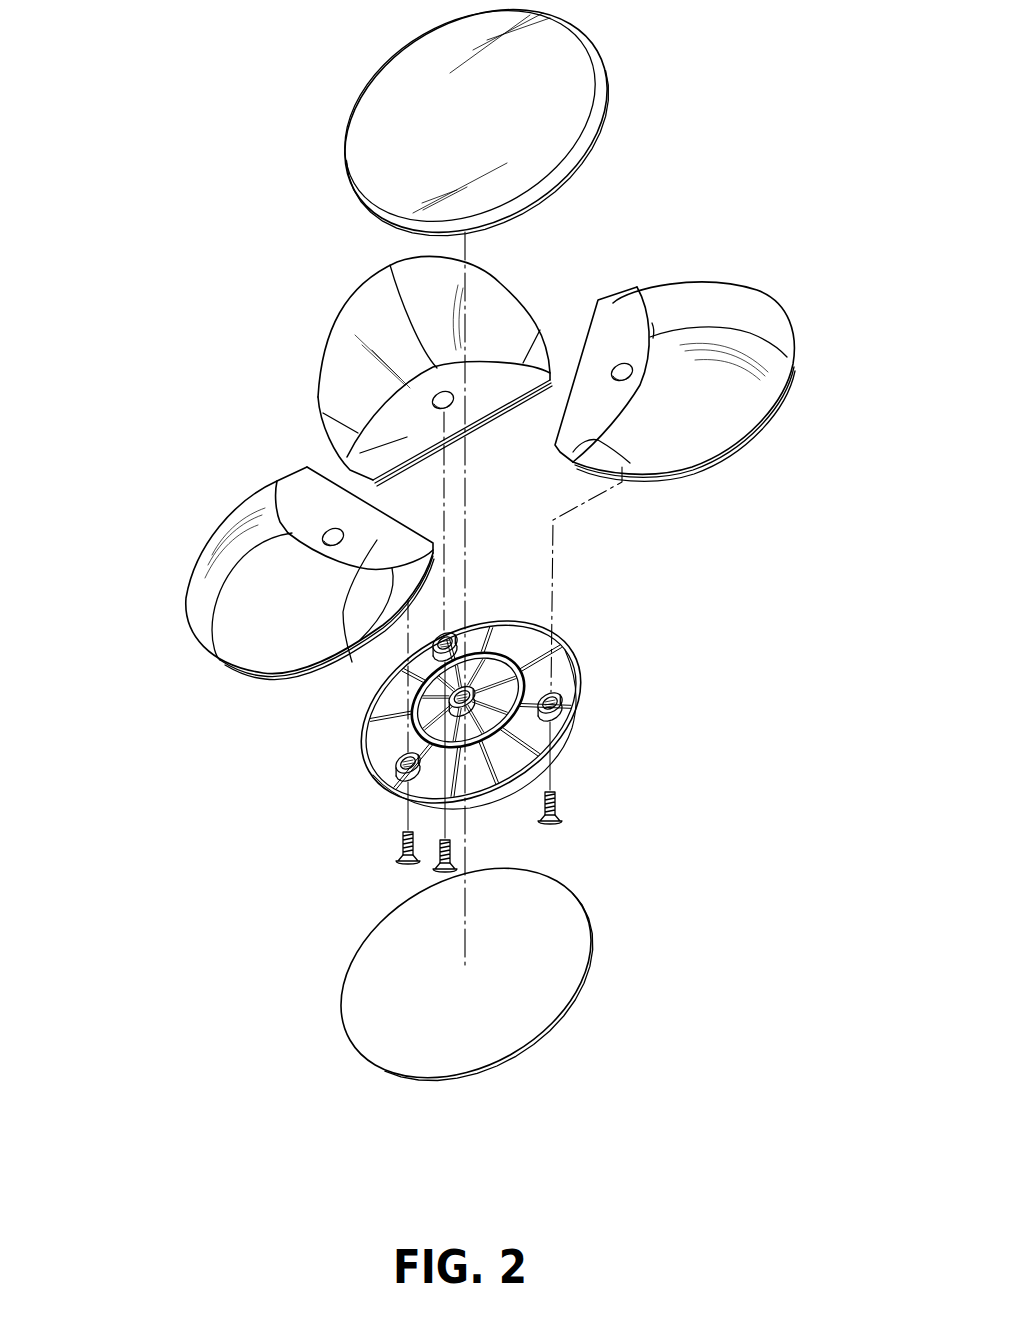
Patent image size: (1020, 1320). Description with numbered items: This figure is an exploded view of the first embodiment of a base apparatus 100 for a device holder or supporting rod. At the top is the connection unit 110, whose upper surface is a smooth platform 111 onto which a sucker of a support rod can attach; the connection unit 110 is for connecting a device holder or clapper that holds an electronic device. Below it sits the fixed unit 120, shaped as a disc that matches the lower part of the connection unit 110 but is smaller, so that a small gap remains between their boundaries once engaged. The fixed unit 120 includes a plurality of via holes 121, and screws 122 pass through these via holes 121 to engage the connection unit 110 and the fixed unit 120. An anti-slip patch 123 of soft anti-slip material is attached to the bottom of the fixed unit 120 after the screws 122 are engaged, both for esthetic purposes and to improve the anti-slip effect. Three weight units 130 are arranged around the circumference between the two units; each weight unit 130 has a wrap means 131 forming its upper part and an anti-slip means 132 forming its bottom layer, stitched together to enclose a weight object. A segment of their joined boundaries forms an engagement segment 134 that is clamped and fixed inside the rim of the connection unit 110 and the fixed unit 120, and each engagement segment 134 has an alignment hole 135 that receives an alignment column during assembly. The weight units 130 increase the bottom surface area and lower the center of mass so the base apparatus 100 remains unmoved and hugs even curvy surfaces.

The base apparatus 100 is at (238, 183).
The connection unit 110 is at (592, 133).
The smooth platform 111 is at (413, 60).
The fixed unit 120 is at (588, 713).
The via holes 121 is at (385, 765).
The screws 122 is at (397, 860).
The anti-slip patch 123 is at (552, 984).
The weight unit 130 is at (177, 579).
The wrap means 131 is at (190, 618).
The anti-slip means 132 is at (262, 672).
The engagement segment 134 is at (637, 287).
The alignment hole 135 is at (436, 403).